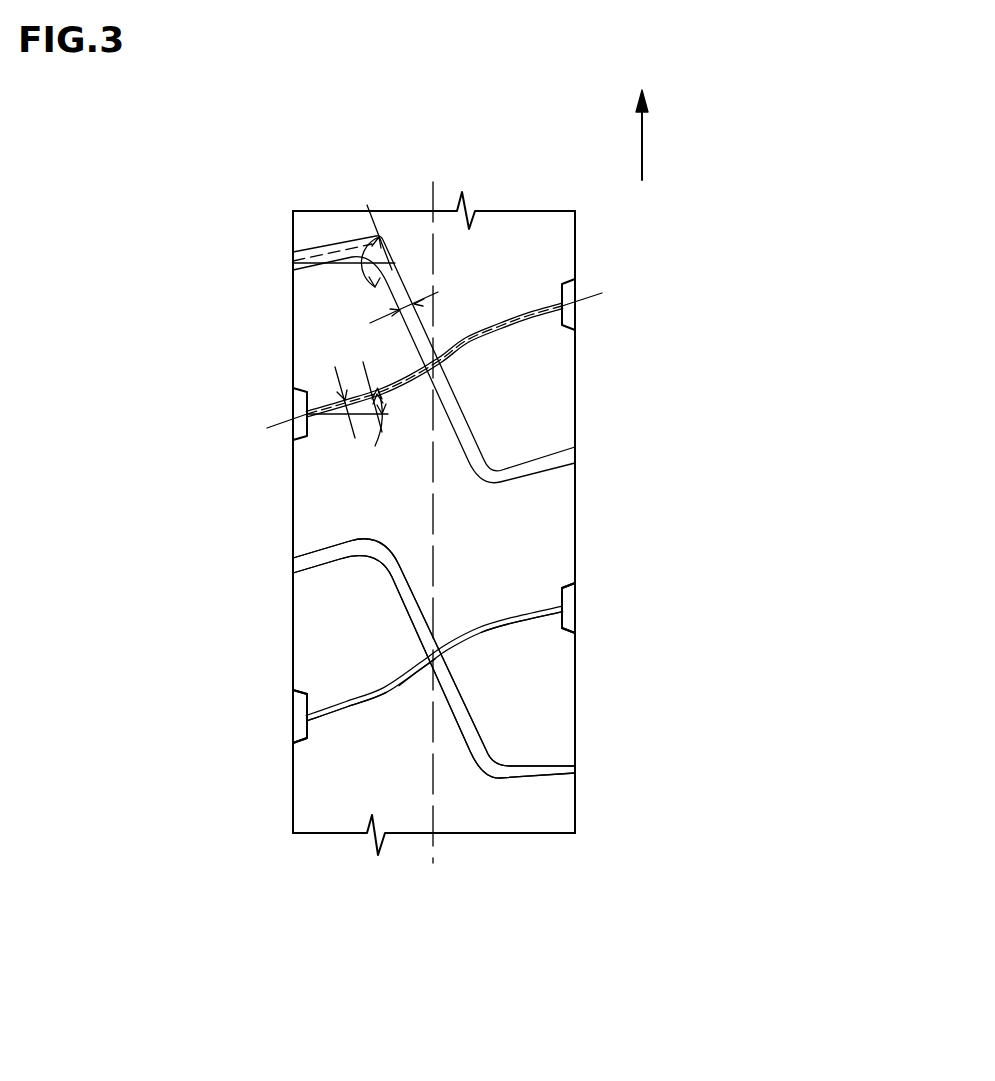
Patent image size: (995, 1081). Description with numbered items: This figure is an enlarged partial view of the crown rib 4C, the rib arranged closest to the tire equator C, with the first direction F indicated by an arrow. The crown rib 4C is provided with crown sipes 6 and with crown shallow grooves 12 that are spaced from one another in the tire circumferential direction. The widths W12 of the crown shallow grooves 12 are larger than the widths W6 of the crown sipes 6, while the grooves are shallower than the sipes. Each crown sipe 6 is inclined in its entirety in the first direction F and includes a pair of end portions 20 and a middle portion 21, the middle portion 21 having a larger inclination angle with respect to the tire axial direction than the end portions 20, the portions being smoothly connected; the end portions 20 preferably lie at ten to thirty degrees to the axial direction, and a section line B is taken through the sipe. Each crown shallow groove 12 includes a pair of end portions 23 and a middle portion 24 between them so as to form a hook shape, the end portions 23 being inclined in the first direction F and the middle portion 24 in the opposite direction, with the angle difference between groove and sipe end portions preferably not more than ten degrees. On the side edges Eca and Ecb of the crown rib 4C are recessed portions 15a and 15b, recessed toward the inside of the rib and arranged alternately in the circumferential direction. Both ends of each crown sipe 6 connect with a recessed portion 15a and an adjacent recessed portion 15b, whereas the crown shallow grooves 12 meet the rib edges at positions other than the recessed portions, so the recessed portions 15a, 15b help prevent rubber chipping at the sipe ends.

The crown rib 4C is at (478, 160).
The crown sipe 6 is at (497, 323).
The crown shallow groove 12 is at (465, 417).
The recessed portion 15a is at (297, 717).
The recessed portion 15b is at (577, 607).
The end portion 20 is at (348, 705).
The middle portion 21 is at (423, 677).
The end portion 23 is at (325, 558).
The middle portion 24 is at (408, 607).
The section line B is at (433, 362).
The tire equator C is at (434, 508).
The first direction F is at (642, 135).
The side edge Eca is at (293, 240).
The side edge Ecb is at (575, 237).
The width of crown shallow groove W12 is at (400, 311).
The width of crown sipe W6 is at (343, 398).